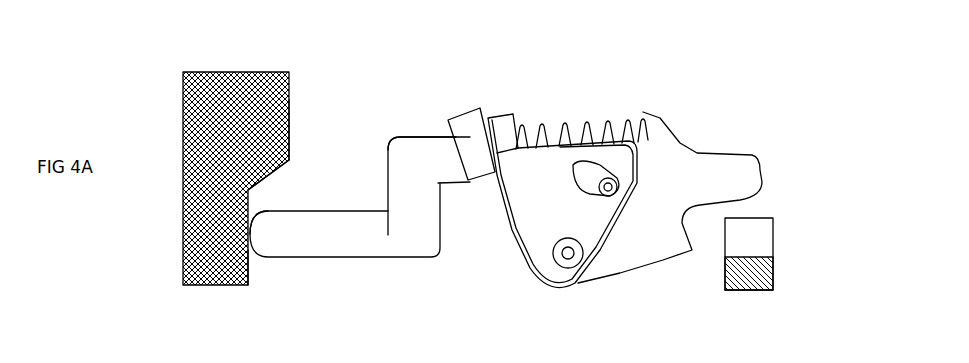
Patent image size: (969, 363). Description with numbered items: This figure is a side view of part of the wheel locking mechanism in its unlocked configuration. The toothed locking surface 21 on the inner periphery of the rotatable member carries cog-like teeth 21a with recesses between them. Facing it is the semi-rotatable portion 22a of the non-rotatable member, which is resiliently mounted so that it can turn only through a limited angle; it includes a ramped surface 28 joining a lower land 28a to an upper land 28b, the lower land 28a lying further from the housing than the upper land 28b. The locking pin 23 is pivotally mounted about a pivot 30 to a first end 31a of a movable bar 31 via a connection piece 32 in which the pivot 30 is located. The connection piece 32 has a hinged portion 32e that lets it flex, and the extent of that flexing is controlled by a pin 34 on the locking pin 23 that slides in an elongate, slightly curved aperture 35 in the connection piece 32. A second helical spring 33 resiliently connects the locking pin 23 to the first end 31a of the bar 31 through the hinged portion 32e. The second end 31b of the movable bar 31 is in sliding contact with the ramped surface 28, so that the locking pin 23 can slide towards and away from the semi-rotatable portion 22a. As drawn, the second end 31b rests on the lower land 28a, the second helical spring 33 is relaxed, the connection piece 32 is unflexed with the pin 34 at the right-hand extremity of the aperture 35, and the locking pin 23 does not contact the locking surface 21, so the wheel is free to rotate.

The locking surface 21 is at (801, 212).
The cog-like teeth 21a is at (757, 242).
The semi-rotatable portion 22a is at (222, 83).
The locking pin 23 is at (738, 178).
The ramped surface 28 is at (272, 178).
The lower land 28a is at (260, 265).
The upper land 28b is at (290, 107).
The pivot 30 is at (568, 268).
The movable bar 31 is at (372, 233).
The first end of the movable bar 31a is at (445, 162).
The second end of the movable bar 31b is at (263, 232).
The connection piece 32 is at (520, 217).
The lever projection 32e is at (475, 135).
The second helical spring 33 is at (600, 128).
The pin 34 is at (614, 186).
The elongate aperture 35 is at (578, 170).